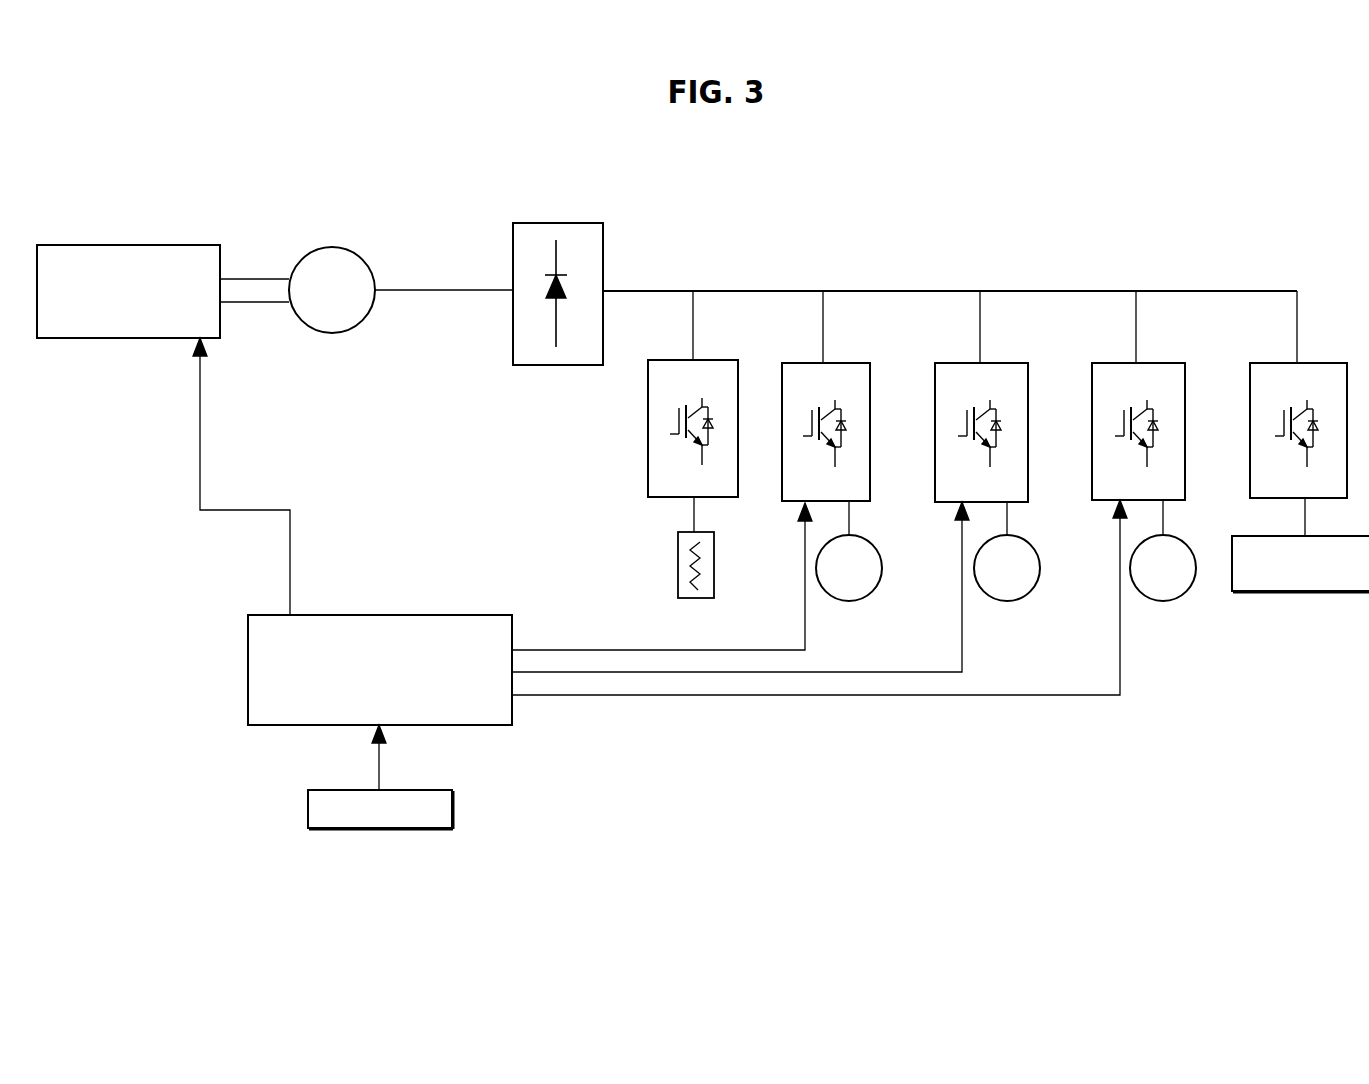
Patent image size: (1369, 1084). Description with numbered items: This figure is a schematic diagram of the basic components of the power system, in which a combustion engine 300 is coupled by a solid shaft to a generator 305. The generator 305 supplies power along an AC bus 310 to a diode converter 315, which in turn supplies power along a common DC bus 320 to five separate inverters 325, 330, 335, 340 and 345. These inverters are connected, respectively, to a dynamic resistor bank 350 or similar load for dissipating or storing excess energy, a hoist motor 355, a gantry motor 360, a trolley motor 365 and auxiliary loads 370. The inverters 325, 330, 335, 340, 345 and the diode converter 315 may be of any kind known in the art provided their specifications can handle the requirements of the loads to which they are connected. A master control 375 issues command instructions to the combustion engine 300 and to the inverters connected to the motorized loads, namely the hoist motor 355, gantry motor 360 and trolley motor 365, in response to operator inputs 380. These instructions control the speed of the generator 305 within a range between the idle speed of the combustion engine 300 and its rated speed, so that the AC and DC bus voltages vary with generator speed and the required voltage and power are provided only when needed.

The combustion engine 300 is at (145, 243).
The generator 305 is at (372, 270).
The AC bus 310 is at (468, 295).
The diode converter 315 is at (606, 250).
The common DC bus 320 is at (873, 288).
The inverter 325 is at (646, 430).
The inverter 330 is at (793, 363).
The inverter 335 is at (945, 362).
The inverter 340 is at (1108, 360).
The inverter 345 is at (1256, 354).
The dynamic resistor bank 350 is at (676, 578).
The hoist motor 355 is at (875, 590).
The gantry motor 360 is at (1035, 591).
The trolley motor 365 is at (1190, 594).
The auxiliary loads 370 is at (1312, 593).
The master control 375 is at (418, 613).
The operator inputs 380 is at (393, 830).